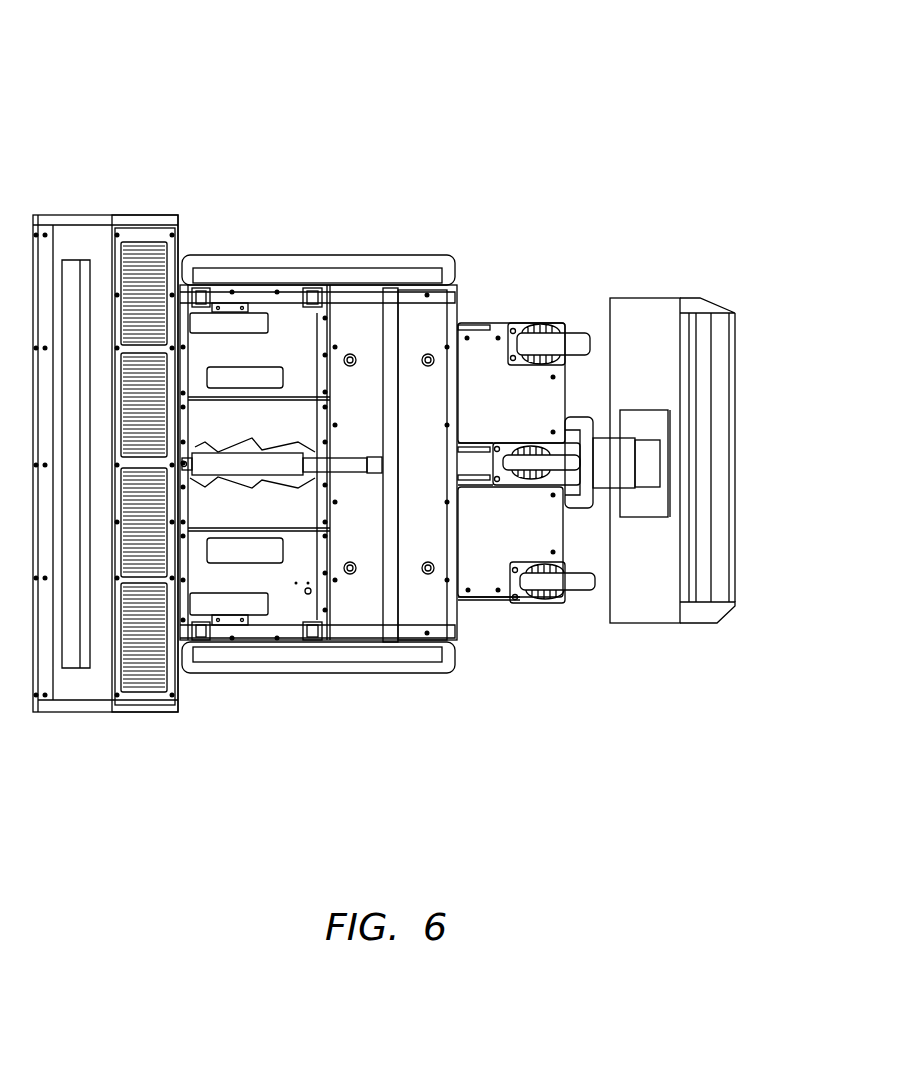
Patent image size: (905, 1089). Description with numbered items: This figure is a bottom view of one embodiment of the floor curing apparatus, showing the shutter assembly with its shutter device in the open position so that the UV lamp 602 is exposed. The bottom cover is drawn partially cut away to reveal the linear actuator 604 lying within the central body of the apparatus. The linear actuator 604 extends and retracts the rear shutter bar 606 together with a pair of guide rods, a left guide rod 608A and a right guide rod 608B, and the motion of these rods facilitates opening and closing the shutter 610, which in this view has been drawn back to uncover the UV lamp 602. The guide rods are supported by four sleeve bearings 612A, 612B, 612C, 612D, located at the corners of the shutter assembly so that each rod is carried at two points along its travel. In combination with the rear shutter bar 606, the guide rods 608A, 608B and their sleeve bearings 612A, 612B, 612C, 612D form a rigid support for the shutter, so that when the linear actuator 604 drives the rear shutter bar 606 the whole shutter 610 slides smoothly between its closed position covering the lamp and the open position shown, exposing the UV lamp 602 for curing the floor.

The UV lamp 602 is at (85, 635).
The linear actuator 604 is at (258, 475).
The rear shutter bar 606 is at (398, 440).
The left guide rod 608A is at (243, 305).
The right guide rod 608B is at (262, 630).
The shutter 610 is at (112, 305).
The sleeve bearing 612A is at (210, 630).
The sleeve bearing 612B is at (317, 630).
The sleeve bearing 612C is at (201, 296).
The sleeve bearing 612D is at (312, 297).